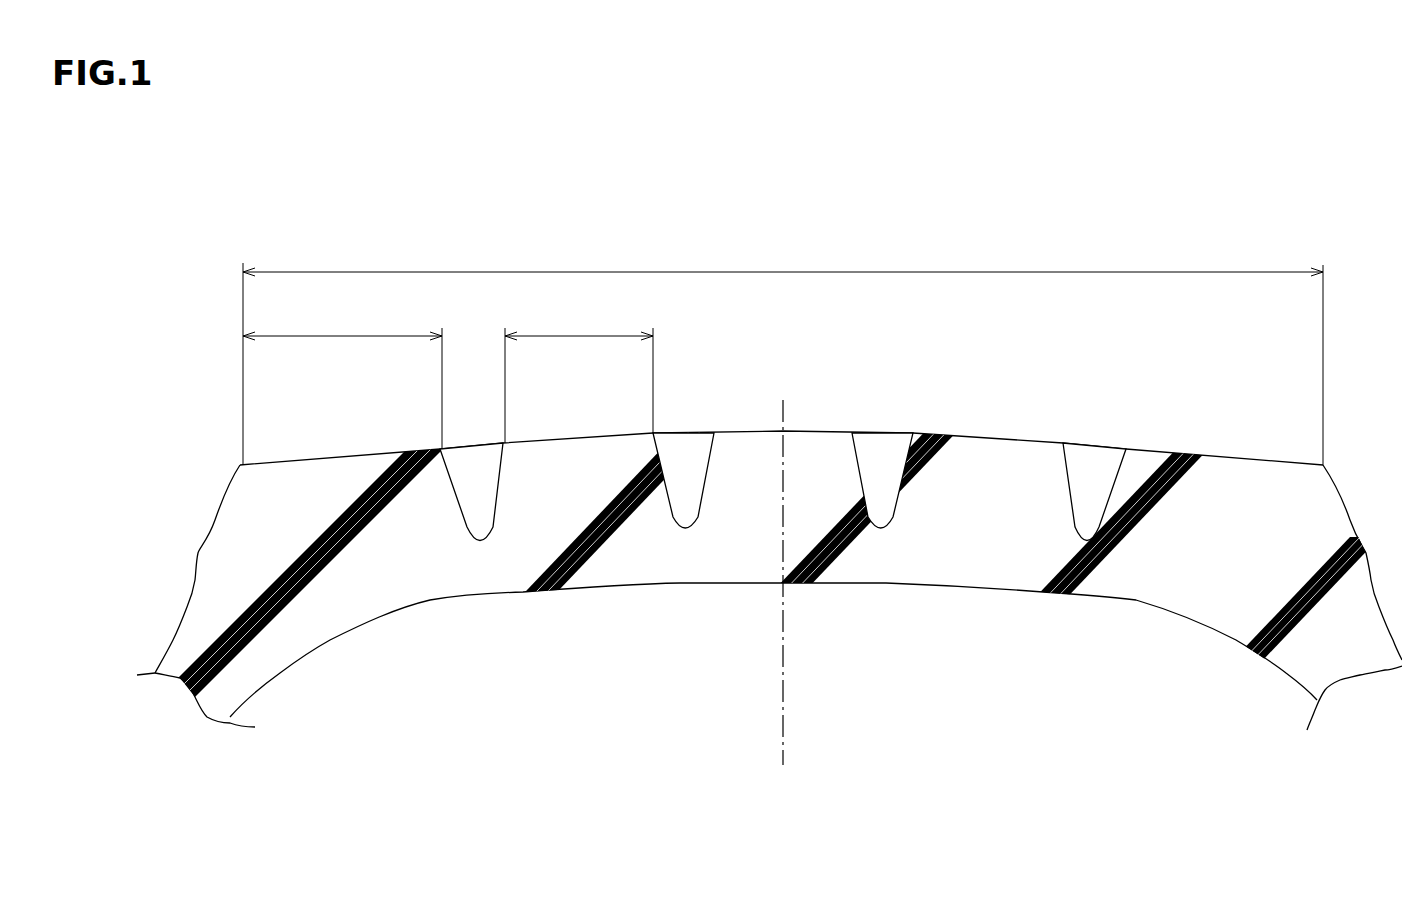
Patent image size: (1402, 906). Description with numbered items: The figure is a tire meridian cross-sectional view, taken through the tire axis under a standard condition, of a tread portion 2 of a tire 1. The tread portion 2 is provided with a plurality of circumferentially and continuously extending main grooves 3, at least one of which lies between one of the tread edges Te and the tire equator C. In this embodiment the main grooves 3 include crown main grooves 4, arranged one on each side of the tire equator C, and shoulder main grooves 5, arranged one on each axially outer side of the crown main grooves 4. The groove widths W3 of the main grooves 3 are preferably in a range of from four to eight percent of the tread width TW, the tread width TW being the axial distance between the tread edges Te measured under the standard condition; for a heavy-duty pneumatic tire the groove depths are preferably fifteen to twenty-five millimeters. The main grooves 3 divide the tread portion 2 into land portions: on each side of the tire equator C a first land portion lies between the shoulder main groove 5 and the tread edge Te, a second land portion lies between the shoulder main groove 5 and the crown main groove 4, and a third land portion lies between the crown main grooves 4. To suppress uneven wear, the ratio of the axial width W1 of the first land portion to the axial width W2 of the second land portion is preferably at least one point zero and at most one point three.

The tire 1 is at (941, 415).
The tread portion 2 is at (811, 415).
The main grooves 3 is at (467, 497).
The crown main grooves 4 is at (682, 462).
The shoulder main grooves 5 is at (1085, 478).
The tread edges Te is at (238, 463).
The tire equator C is at (782, 568).
The tread width TW is at (783, 351).
The axial width of the first land portion W1 is at (342, 375).
The axial width of the second land portion W2 is at (579, 367).
The groove widths of the main grooves W3 is at (477, 372).